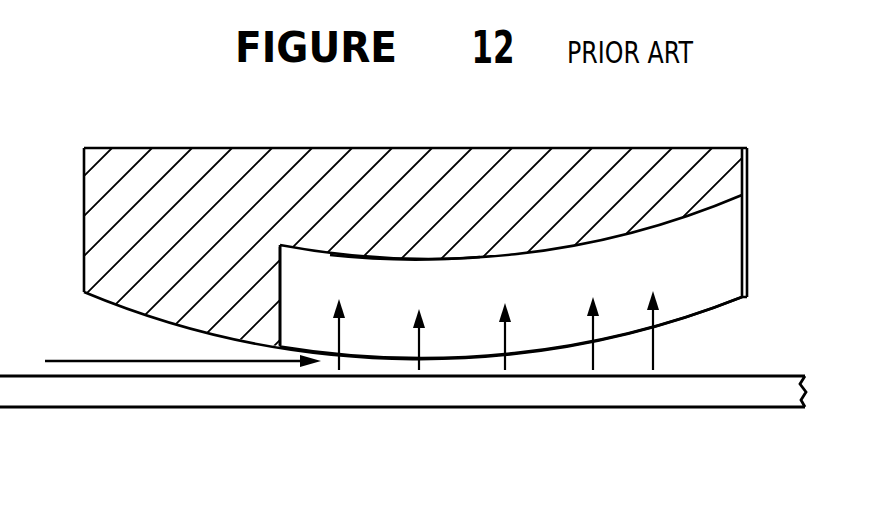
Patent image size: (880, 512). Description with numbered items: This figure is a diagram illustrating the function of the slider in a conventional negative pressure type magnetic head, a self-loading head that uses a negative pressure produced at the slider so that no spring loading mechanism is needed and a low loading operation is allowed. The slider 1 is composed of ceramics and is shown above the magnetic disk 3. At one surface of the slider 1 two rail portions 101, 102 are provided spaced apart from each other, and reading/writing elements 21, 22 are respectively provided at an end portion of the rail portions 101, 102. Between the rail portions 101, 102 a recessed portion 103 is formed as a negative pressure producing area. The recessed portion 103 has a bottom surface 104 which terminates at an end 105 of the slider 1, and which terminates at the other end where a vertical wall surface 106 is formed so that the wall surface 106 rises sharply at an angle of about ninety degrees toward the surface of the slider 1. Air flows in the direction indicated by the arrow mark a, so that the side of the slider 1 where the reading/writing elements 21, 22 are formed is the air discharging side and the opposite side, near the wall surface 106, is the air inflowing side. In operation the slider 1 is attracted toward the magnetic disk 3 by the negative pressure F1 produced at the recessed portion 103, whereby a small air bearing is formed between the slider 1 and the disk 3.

The slider 1 is at (212, 192).
The magnetic disk 3 is at (547, 393).
The reading/writing element 21 is at (798, 222).
The reading/writing element 22 is at (748, 222).
The rail portion 101 is at (563, 327).
The rail portion 102 is at (700, 313).
The recessed portion 103 is at (562, 283).
The bottom surface 104 is at (416, 260).
The end of the slider 105 is at (748, 272).
The vertical wall surface 106 is at (286, 273).
The negative pressure F1 is at (688, 422).
The arrow mark a is at (117, 360).